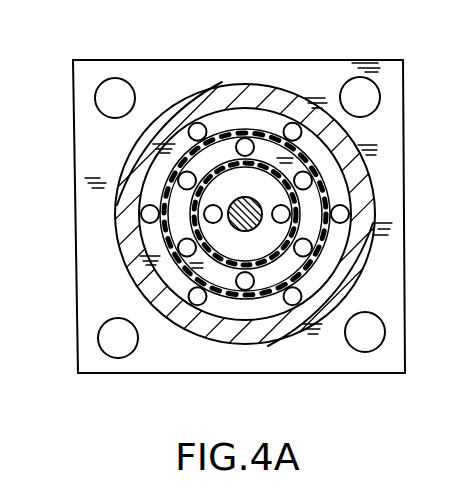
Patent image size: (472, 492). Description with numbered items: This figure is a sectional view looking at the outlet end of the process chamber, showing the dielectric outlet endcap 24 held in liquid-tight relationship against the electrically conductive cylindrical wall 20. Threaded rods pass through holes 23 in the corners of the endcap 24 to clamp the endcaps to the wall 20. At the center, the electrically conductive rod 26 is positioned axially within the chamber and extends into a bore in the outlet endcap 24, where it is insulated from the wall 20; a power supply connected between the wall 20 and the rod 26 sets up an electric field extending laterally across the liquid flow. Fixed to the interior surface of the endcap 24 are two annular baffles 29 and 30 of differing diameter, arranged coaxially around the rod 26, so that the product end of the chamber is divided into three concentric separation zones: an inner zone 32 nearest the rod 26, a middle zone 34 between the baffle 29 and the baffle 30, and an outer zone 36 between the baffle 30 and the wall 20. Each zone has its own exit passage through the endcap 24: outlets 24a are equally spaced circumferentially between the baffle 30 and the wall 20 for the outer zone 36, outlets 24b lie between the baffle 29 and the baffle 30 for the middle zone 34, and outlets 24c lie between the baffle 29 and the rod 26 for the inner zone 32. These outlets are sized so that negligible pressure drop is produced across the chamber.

The cylindrical wall 20 is at (362, 178).
The holes 23 is at (120, 84).
The outlet endcap 24 is at (92, 86).
The outlets 24a is at (177, 138).
The outlets 24b is at (243, 137).
The outlets 24c is at (283, 201).
The rod 26 is at (278, 256).
The annular baffle 29 is at (140, 258).
The annular baffle 30 is at (305, 300).
The inner zone 32 is at (365, 332).
The middle zone 34 is at (136, 243).
The outer zone 36 is at (300, 262).